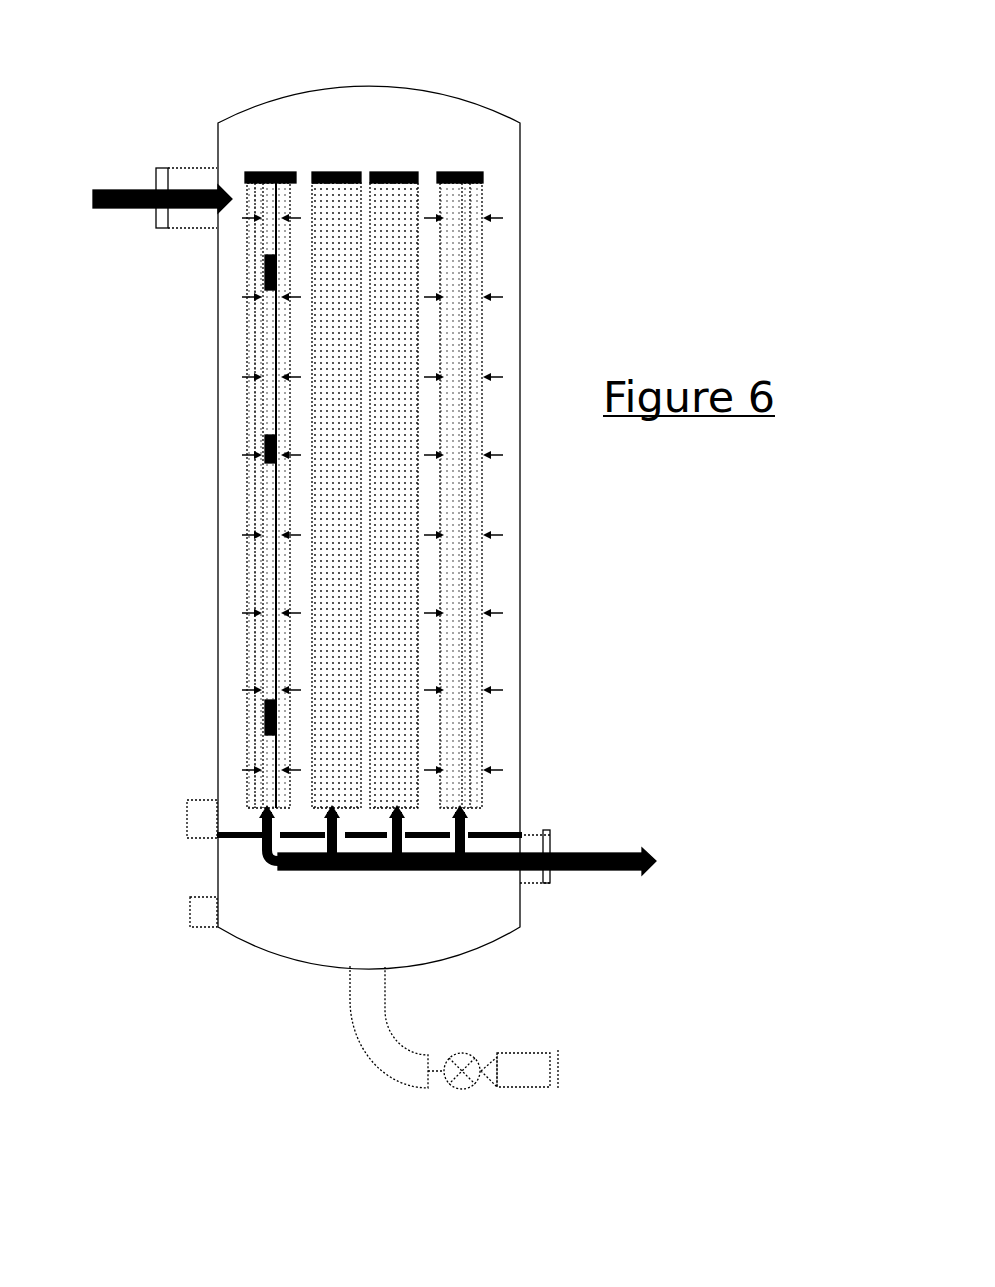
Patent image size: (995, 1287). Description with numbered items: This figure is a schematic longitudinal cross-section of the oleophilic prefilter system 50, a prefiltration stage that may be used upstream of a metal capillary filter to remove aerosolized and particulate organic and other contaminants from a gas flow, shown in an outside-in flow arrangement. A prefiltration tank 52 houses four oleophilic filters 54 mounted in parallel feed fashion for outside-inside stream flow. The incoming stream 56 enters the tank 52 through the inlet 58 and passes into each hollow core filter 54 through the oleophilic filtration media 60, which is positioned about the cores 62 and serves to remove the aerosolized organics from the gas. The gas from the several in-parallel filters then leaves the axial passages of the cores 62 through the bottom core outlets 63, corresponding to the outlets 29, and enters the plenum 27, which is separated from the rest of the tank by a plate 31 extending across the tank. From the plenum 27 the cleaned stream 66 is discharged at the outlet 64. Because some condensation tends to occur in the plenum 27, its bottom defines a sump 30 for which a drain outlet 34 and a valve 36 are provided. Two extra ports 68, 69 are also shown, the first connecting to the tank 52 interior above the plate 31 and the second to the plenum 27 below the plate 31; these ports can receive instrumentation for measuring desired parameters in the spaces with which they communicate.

The oleophilic prefilter system 50 is at (404, 579).
The prefiltration tank 52 is at (326, 495).
The oleophilic filters 54 is at (364, 99).
The stream 56 is at (137, 250).
The inlet 58 is at (127, 153).
The oleophilic filtration media 60 is at (195, 495).
The cores 62 is at (183, 495).
The outlets 29 is at (425, 731).
The plate 31 is at (295, 870).
The plenum 27 is at (464, 925).
The stream 66 is at (685, 801).
The outlet 64 is at (641, 911).
The port 68 is at (141, 773).
The port 69 is at (138, 966).
The bottom core outlets 63 is at (316, 935).
The sump 30 is at (522, 1002).
The drain outlet 34 is at (336, 1027).
The valve 36 is at (546, 1096).